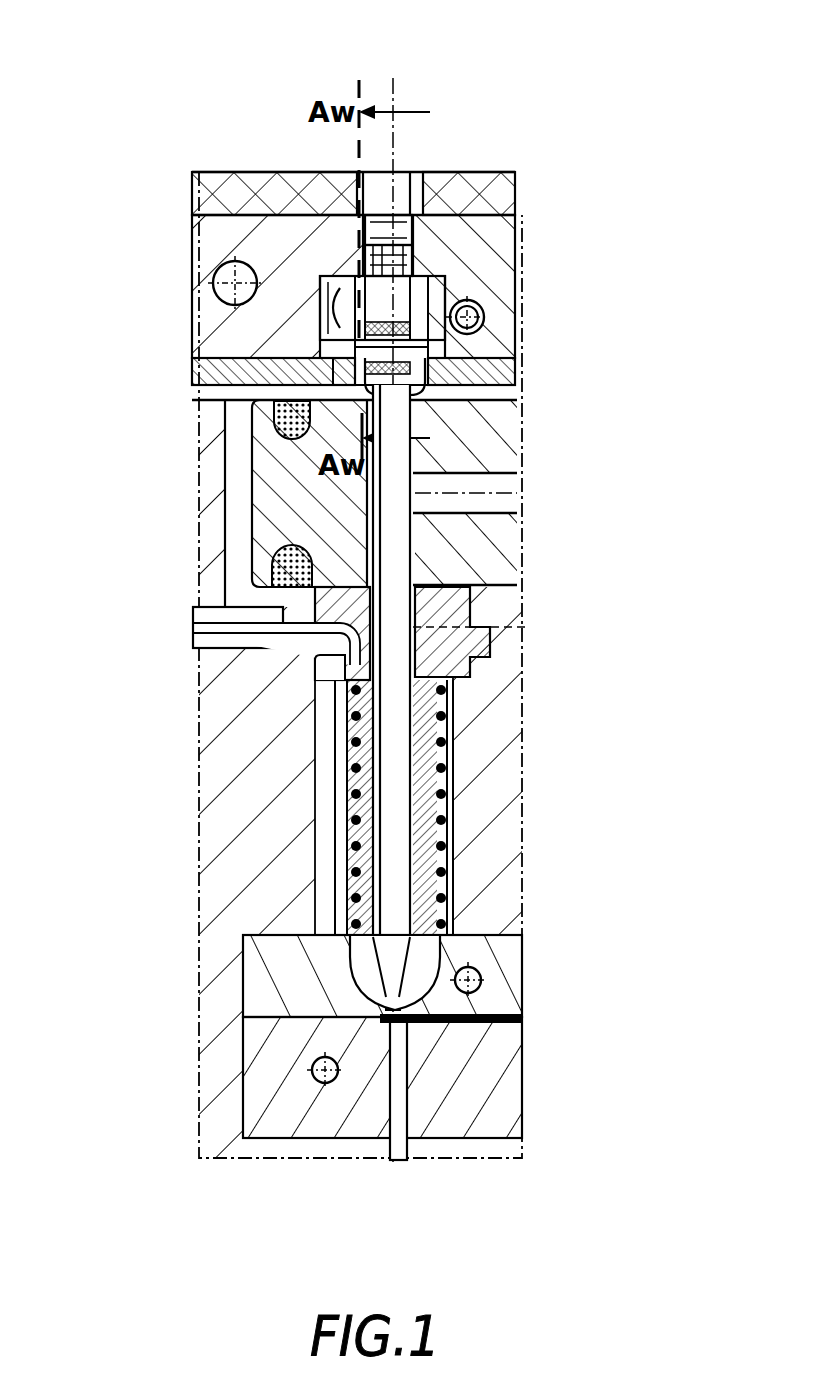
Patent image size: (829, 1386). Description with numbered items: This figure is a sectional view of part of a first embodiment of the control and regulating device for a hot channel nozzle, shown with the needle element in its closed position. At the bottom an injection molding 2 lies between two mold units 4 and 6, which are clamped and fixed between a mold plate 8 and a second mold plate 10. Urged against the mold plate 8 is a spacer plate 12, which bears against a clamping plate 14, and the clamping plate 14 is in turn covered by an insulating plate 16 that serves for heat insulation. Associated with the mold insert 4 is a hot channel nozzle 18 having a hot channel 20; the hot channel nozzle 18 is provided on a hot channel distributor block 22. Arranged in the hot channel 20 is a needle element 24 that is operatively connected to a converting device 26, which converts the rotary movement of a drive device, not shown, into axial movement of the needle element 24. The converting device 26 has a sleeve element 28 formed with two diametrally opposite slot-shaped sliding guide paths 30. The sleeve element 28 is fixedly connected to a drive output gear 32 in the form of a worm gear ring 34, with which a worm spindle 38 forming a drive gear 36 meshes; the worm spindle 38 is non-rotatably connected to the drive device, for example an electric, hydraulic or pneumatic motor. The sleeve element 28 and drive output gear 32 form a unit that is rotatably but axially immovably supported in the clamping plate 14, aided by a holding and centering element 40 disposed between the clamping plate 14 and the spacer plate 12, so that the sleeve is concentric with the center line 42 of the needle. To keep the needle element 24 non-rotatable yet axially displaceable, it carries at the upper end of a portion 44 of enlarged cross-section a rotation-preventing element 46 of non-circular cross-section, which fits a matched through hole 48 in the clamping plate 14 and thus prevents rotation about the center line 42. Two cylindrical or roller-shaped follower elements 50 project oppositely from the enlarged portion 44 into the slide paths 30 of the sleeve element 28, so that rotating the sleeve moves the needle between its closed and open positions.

The injection molding 2 is at (490, 1022).
The mold unit 4 is at (258, 1000).
The mold unit 6 is at (468, 1110).
The mold plate 8 is at (246, 733).
The injection nozzle assembly 10 is at (222, 1140).
The spacer plate 12 is at (205, 455).
The clamping plate 14 is at (276, 240).
The insulating plate 16 is at (215, 200).
The hot channel nozzle 18 is at (455, 748).
The hot channel 20 is at (453, 893).
The hot channel distributor block 22 is at (470, 543).
The needle element 24 is at (393, 808).
The converting device 26 is at (483, 293).
The sleeve element 28 is at (452, 267).
The slot-shaped sliding guide paths 30 is at (357, 383).
The drive output gear 32 is at (322, 278).
The worm gear ring 34 is at (318, 313).
The drive gear 36 is at (490, 305).
The worm spindle 38 is at (490, 305).
The holding and centering element 40 is at (267, 377).
The center line 42 is at (392, 606).
The portion of enlarged cross-section 44 is at (418, 394).
The rotation-preventing element 46 is at (422, 272).
The through hole 48 is at (410, 230).
The follower elements 50 is at (318, 340).